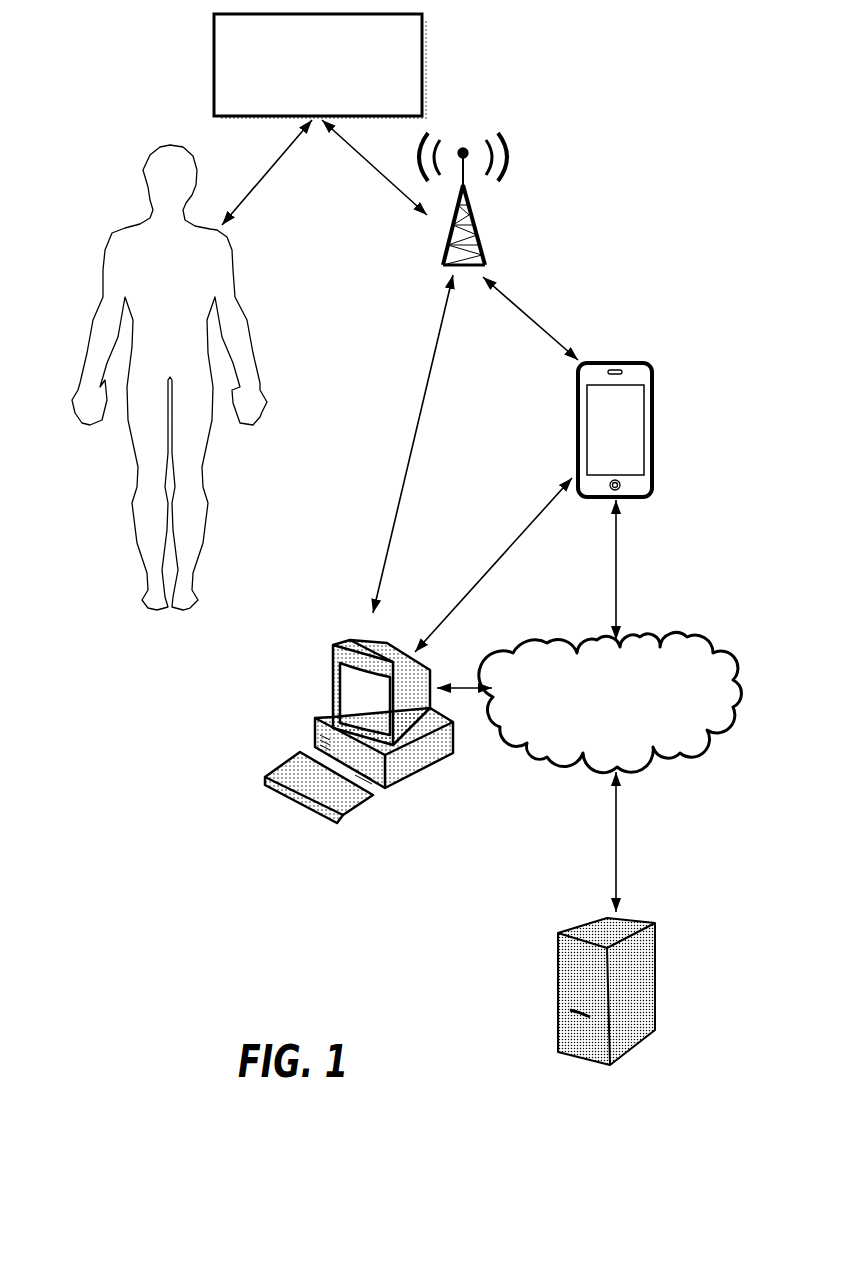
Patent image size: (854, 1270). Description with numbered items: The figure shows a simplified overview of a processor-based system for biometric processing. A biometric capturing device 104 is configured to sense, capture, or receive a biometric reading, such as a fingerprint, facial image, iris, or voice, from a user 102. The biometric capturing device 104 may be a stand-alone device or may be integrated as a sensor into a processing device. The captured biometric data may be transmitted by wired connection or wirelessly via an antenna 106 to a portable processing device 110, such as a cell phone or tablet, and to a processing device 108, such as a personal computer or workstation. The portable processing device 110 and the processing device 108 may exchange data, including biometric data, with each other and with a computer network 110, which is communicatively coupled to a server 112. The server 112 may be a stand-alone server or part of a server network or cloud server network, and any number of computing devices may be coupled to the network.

The user 102 is at (103, 272).
The biometric capturing device 104 is at (320, 67).
The antenna 106 is at (482, 223).
The processing device 108 is at (418, 772).
The portable processing device 110 is at (620, 362).
The server 112 is at (608, 1068).